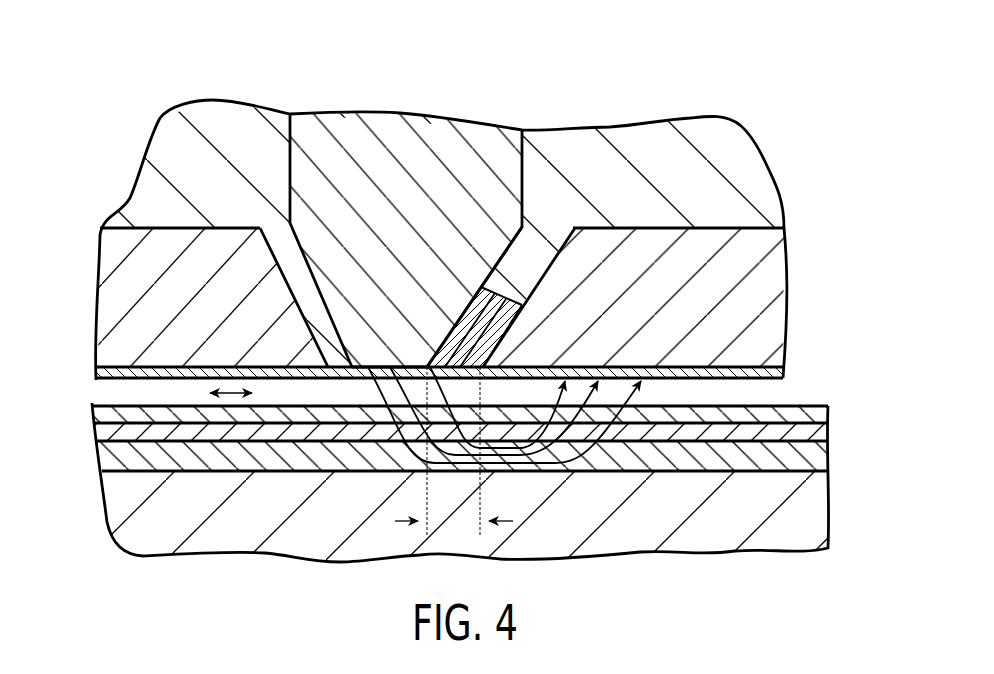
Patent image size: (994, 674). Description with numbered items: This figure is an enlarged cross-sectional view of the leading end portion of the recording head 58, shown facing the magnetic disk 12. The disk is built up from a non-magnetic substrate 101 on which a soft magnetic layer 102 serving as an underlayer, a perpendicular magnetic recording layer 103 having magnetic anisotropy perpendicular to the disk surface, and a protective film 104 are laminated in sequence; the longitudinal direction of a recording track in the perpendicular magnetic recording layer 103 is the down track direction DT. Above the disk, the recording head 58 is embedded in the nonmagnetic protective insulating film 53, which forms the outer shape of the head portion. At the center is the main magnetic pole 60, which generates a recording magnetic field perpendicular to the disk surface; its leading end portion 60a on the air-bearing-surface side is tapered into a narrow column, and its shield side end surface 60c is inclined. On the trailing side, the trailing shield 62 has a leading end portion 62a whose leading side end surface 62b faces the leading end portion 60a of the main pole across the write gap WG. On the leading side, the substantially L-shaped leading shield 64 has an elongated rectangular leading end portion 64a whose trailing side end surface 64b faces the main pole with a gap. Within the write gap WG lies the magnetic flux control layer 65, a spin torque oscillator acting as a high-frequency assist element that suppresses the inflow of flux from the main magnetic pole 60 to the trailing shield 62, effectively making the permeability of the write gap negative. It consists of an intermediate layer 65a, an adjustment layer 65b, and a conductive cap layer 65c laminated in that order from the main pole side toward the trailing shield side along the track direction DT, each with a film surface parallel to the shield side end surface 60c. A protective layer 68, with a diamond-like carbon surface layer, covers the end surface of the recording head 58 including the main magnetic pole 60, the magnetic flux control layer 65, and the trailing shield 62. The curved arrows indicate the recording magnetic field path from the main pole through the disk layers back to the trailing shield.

The magnetic disk 12 is at (496, 504).
The protective insulating film 53 is at (693, 137).
The recording head 58 is at (258, 86).
The main magnetic pole 60 is at (350, 133).
The leading end portion 60a is at (397, 267).
The shield side end surface 60c is at (528, 166).
The trailing shield 62 is at (780, 286).
The leading end portion 62a is at (707, 247).
The leading side end surface 62b is at (547, 255).
The leading shield 64 is at (104, 296).
The leading end portion 64a is at (153, 238).
The trailing side end surface 64b is at (283, 247).
The magnetic flux control layer 65 is at (424, 186).
The intermediate layer 65a is at (455, 308).
The adjustment layer 65b is at (478, 312).
The conductive cap layer 65c is at (493, 292).
The protective layer 68 is at (780, 372).
The substrate 101 is at (814, 500).
The soft magnetic layer 102 is at (816, 457).
The perpendicular magnetic recording layer 103 is at (806, 433).
The protective film 104 is at (817, 414).
The write gap WG is at (454, 460).
The down track direction DT is at (233, 395).